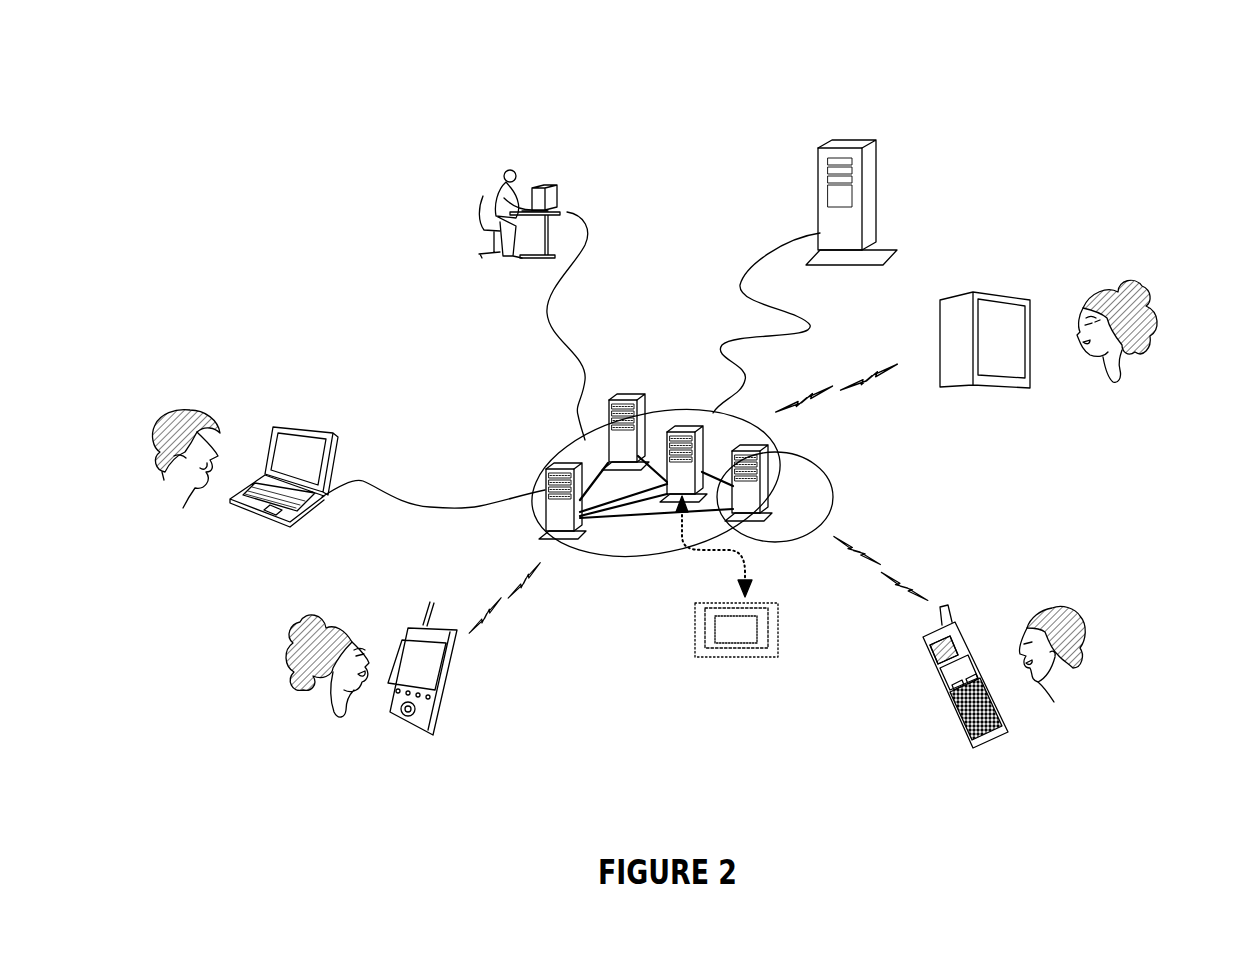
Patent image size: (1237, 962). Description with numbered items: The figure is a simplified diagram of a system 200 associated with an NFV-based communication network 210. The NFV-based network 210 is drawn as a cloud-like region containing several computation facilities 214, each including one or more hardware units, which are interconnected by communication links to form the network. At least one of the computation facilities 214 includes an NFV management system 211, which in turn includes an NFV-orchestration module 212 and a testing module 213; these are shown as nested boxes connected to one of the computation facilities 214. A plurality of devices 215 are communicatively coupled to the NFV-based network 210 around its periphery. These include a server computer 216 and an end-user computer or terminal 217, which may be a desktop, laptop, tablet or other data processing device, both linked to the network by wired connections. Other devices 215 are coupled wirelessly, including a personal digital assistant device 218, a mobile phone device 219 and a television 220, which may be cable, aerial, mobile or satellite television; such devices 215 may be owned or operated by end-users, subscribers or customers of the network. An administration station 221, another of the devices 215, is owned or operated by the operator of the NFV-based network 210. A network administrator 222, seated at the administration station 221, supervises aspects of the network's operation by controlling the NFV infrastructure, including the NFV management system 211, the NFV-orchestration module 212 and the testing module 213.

The system 200 is at (1173, 150).
The NFV-based communication network 210 is at (707, 413).
The NFV management system 211 is at (695, 607).
The NFV-orchestration (NFV-O) module 212 is at (705, 625).
The testing module 213 is at (715, 638).
The computation facilities 214 is at (635, 400).
The devices 215 is at (545, 188).
The server computer 216 is at (880, 188).
The computer or terminal 217 is at (330, 465).
The personal digital assistant (PDA) device 218 is at (445, 705).
The mobile phone device 219 is at (960, 720).
The television 220 is at (940, 350).
The administration station 221 is at (558, 212).
The network administrator 222 is at (490, 200).